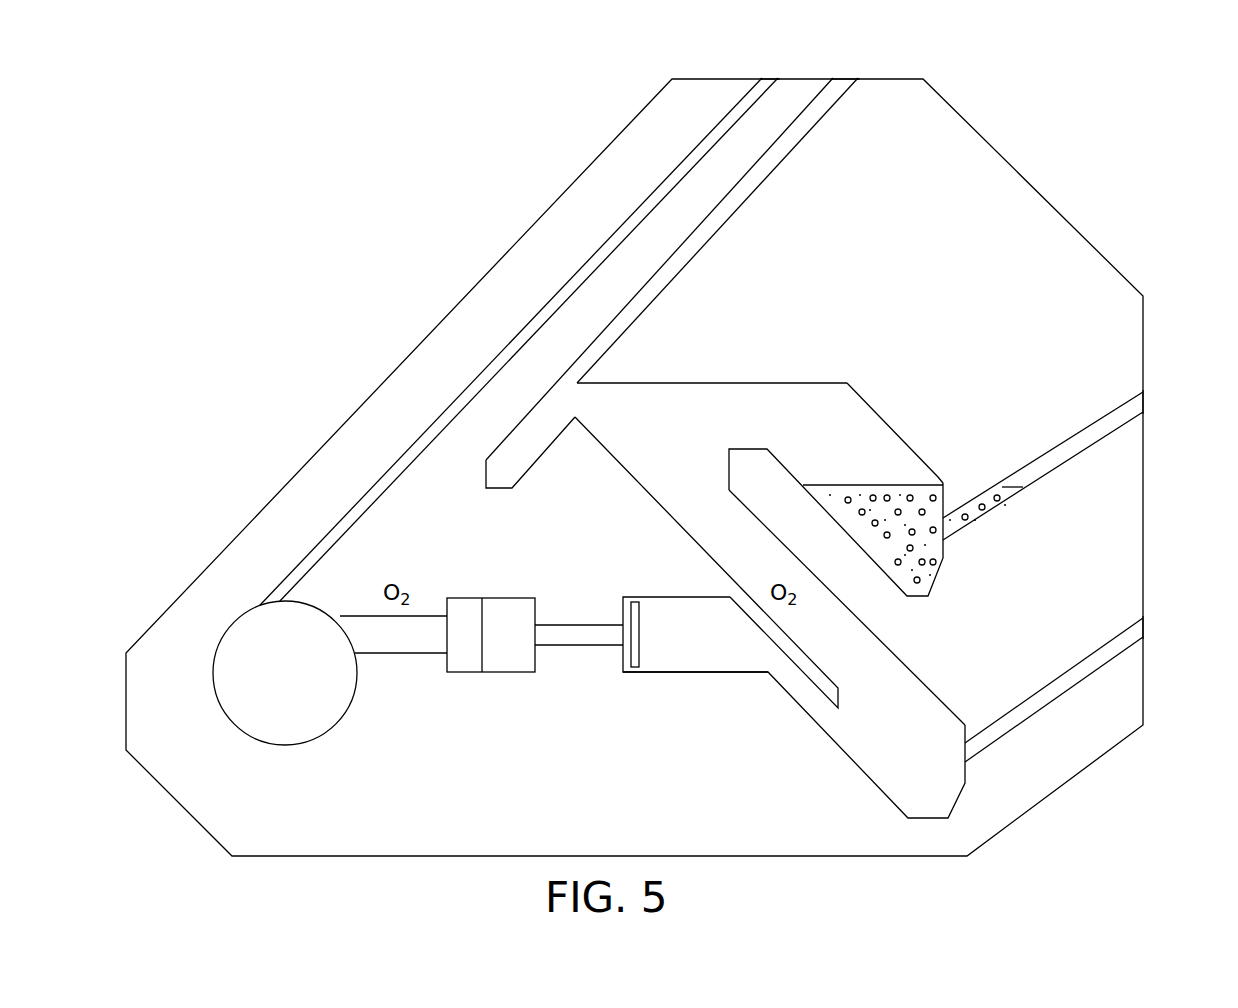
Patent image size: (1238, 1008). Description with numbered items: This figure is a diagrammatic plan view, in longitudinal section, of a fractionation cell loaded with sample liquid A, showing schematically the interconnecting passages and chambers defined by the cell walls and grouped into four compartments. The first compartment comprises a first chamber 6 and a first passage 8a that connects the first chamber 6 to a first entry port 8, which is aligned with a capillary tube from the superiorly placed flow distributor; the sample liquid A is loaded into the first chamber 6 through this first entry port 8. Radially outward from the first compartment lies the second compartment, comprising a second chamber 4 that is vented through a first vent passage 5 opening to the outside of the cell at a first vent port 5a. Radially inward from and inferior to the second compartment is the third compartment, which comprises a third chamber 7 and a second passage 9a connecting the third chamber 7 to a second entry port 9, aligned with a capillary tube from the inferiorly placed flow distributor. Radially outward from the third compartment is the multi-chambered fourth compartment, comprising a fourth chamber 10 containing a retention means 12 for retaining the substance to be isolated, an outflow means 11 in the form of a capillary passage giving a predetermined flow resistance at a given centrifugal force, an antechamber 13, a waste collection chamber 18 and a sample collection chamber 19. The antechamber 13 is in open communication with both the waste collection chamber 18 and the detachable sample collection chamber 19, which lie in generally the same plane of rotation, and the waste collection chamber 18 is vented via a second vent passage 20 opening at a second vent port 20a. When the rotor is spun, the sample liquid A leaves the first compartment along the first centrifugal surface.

The second chamber 4 is at (538, 440).
The first vent passage 5 is at (663, 275).
The first vent port 5a is at (845, 78).
The first chamber 6 is at (862, 478).
The third chamber 7 is at (907, 715).
The first entry port 8 is at (1143, 398).
The first passage 8a is at (1032, 477).
The second entry port 9 is at (1147, 625).
The second passage 9a is at (1025, 710).
The fourth chamber 10 is at (715, 632).
The outflow means 11 is at (603, 650).
The retention means 12 is at (636, 670).
The antechamber 13 is at (457, 652).
The waste collection chamber 18 is at (238, 617).
The sample collection chamber 19 is at (294, 636).
The second vent passage 20 is at (405, 456).
The second vent port 20a is at (771, 78).
The sample liquid A is at (897, 523).